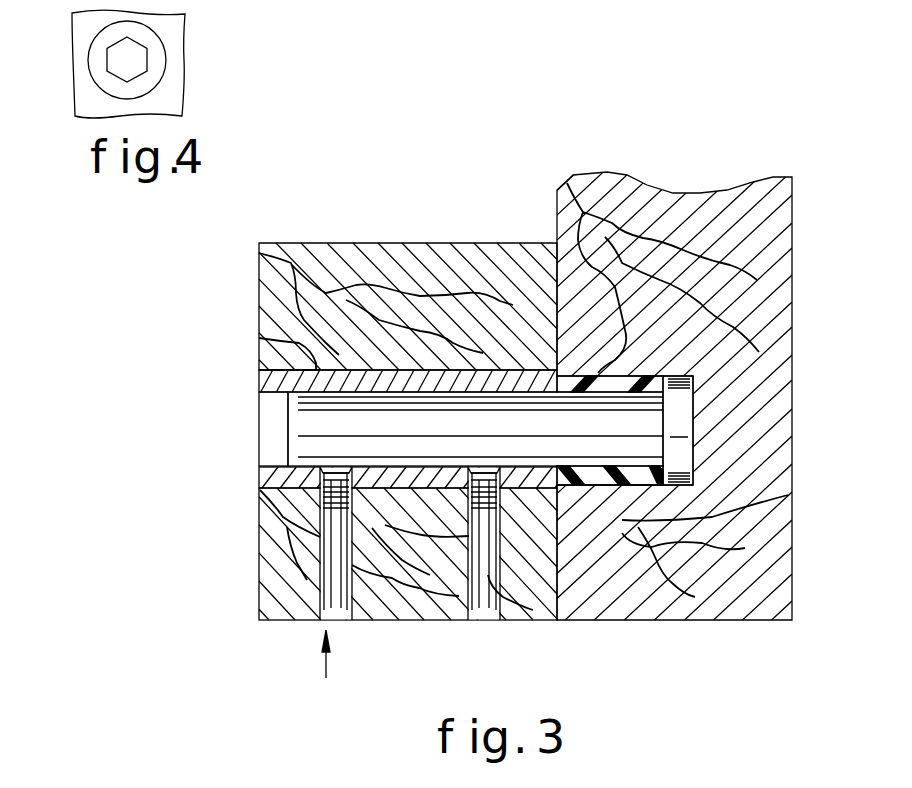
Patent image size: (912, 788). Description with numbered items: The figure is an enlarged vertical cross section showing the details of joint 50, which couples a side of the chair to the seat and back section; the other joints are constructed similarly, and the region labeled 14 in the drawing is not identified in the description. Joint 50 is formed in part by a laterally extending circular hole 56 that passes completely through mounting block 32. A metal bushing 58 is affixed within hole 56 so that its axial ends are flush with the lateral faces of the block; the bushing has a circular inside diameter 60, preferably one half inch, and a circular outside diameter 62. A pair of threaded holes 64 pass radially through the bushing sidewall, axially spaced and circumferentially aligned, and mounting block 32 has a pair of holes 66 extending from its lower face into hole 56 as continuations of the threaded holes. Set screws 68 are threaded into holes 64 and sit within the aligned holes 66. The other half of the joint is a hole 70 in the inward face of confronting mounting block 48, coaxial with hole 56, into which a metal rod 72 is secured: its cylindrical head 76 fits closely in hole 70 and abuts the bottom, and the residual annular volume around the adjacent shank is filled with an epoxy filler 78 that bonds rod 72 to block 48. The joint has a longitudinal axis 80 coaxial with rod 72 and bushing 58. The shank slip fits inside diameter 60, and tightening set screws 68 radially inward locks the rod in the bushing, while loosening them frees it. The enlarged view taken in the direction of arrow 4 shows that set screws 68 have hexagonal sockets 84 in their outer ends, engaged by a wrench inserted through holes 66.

In FIG. 3, the arrow 4 is at (327, 662).
In FIG. 3, the pin 14 is at (402, 420).
In FIG. 3, the mounting block 32 is at (343, 250).
In FIG. 4, the mounting block 32 is at (167, 27).
In FIG. 3, the mounting block 48 is at (650, 190).
In FIG. 3, the joint 50 is at (232, 298).
In FIG. 3, the hole 56 is at (307, 347).
In FIG. 3, the bushing 58 is at (263, 490).
In FIG. 3, the inside diameter 60 is at (275, 468).
In FIG. 3, the outside diameter 62 is at (272, 368).
In FIG. 3, the threaded holes 64 is at (352, 500).
In FIG. 3, the holes 66 is at (320, 547).
In FIG. 3, the set screws 68 is at (320, 513).
In FIG. 4, the set screws 68 is at (150, 68).
In FIG. 3, the hole 70 is at (600, 378).
In FIG. 3, the rod 72 is at (288, 410).
In FIG. 3, the head 76 is at (677, 417).
In FIG. 3, the filler 78 is at (632, 480).
In FIG. 3, the longitudinal axis 80 is at (607, 438).
In FIG. 4, the sockets 84 is at (113, 53).